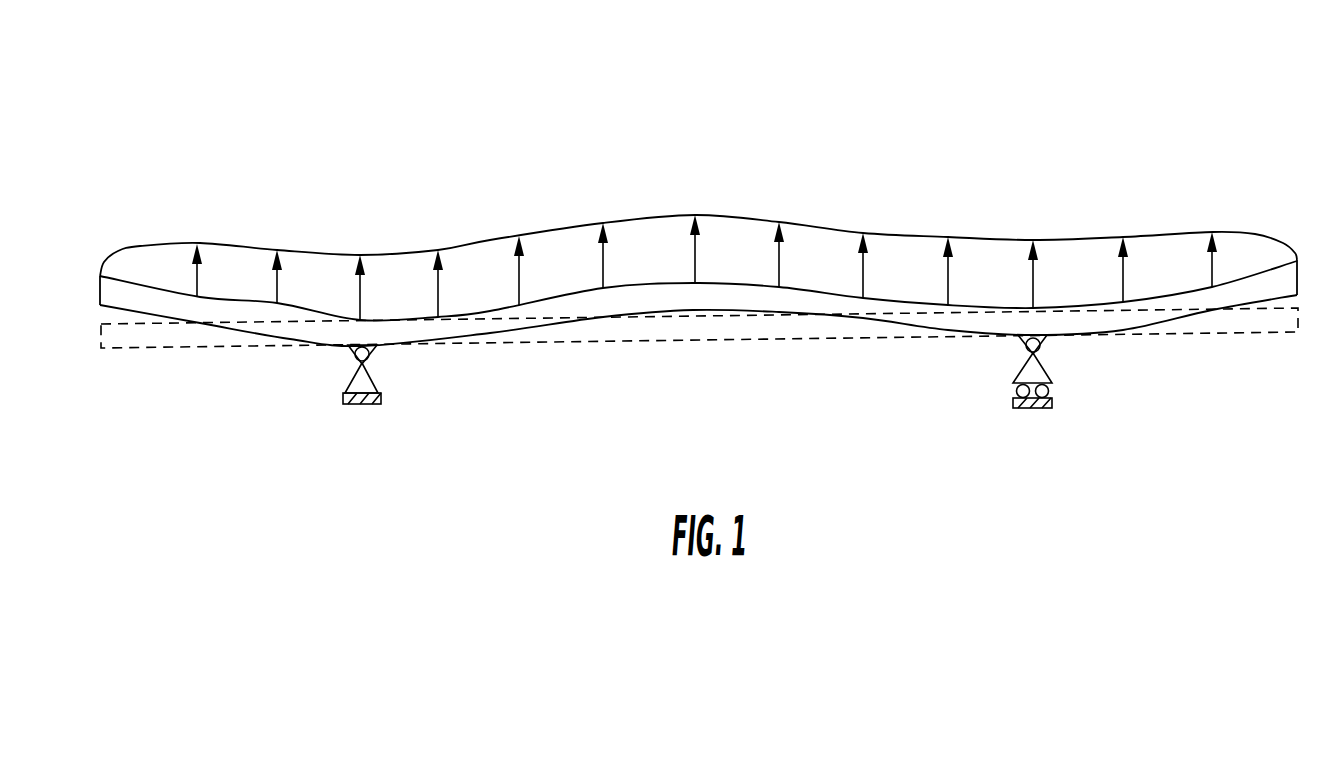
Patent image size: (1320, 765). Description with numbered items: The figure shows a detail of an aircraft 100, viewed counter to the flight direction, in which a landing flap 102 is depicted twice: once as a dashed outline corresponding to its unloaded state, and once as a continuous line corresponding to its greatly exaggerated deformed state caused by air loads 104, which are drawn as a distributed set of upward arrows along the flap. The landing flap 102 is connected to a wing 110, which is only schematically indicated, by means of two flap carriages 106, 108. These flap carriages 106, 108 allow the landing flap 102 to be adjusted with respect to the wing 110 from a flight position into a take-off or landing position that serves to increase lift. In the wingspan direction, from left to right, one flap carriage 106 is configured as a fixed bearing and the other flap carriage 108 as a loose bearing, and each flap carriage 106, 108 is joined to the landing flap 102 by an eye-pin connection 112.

The aircraft 100 is at (216, 128).
The landing flap 102 is at (827, 322).
The air loads 104 is at (865, 265).
The flap carriage 106 is at (350, 380).
The flap carriage 108 is at (1017, 372).
The wing 110 is at (368, 405).
The eye-pin connection 112 is at (373, 358).